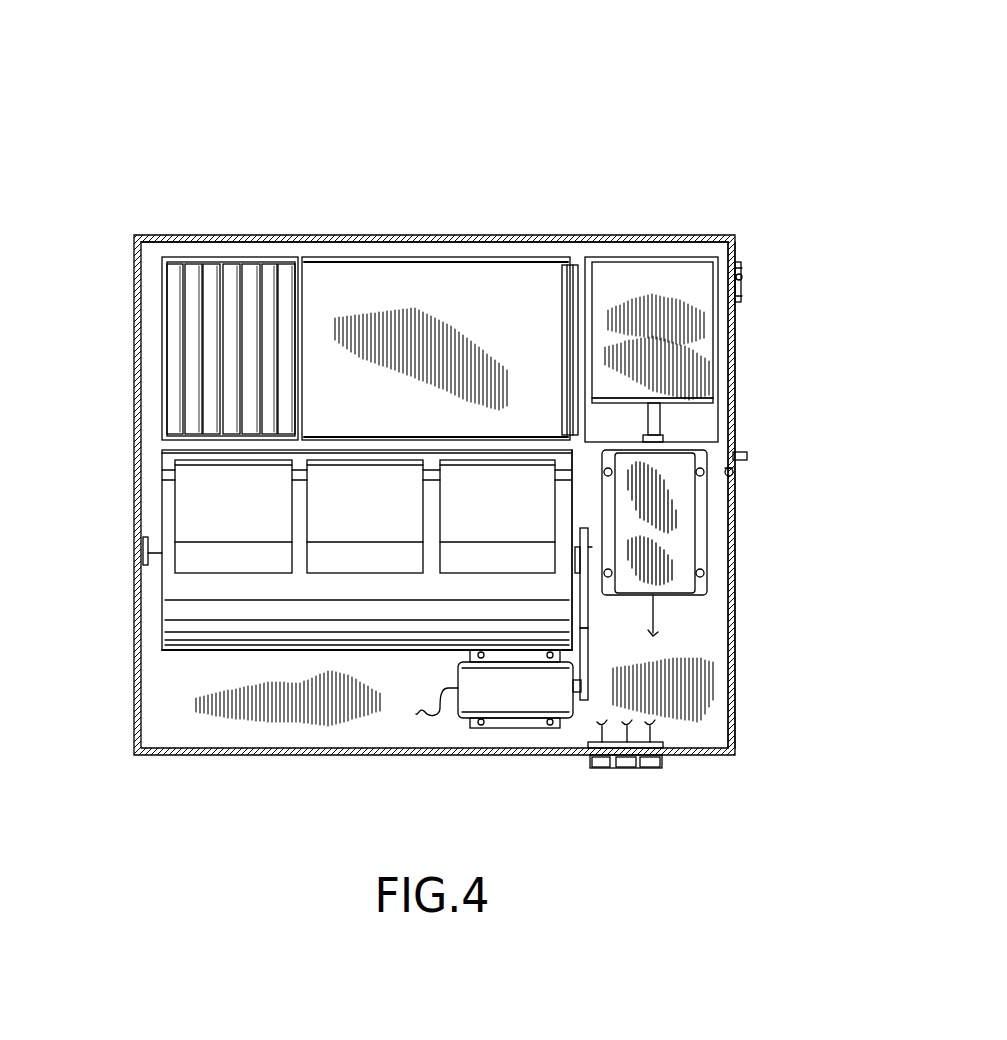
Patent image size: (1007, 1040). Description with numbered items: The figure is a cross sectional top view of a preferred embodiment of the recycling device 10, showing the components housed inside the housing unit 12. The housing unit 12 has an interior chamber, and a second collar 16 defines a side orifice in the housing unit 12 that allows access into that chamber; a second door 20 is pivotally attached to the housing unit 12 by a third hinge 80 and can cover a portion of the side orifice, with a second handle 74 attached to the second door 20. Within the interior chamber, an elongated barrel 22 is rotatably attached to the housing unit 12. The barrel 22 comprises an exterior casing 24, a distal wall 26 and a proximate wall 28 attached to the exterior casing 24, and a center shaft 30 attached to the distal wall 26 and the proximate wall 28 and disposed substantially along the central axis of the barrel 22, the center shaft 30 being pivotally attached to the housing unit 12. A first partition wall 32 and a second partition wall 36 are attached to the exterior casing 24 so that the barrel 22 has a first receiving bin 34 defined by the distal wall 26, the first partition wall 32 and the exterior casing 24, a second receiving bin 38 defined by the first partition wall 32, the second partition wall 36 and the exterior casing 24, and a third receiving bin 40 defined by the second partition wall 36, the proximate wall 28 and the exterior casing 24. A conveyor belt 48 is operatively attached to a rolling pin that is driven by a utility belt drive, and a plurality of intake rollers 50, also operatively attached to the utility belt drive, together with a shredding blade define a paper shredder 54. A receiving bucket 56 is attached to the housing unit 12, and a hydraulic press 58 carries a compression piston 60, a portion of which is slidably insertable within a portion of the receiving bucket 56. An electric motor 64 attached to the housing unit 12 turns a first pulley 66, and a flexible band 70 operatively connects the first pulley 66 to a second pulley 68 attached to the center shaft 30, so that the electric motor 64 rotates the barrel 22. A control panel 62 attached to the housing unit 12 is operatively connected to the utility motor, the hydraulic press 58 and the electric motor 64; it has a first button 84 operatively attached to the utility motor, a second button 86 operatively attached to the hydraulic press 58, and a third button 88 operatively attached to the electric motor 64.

The recycling device 10 is at (168, 82).
The housing unit 12 is at (228, 236).
The paper shredder 54 is at (272, 240).
The second door 20 is at (735, 389).
The intake rollers 50 is at (175, 386).
The conveyor belt 48 is at (431, 290).
The receiving bucket 56 is at (718, 326).
The compression piston 60 is at (672, 403).
The third hinge 80 is at (738, 268).
The second handle 74 is at (748, 457).
The second collar 16 is at (730, 472).
The hydraulic press 58 is at (663, 565).
The center shaft 30 is at (577, 548).
The distal wall 26 is at (155, 508).
The first receiving bin 34 is at (203, 502).
The first partition wall 32 is at (300, 502).
The second receiving bin 38 is at (348, 491).
The second partition wall 36 is at (432, 502).
The third receiving bin 40 is at (483, 498).
The proximate wall 28 is at (567, 510).
The exterior casing 24 is at (197, 590).
The elongated barrel 22 is at (213, 650).
The second pulley 68 is at (590, 580).
The flexible band 70 is at (583, 637).
The first pulley 66 is at (610, 705).
The electric motor 64 is at (518, 692).
The control panel 62 is at (663, 757).
The first button 84 is at (603, 767).
The second button 86 is at (627, 768).
The third button 88 is at (650, 768).